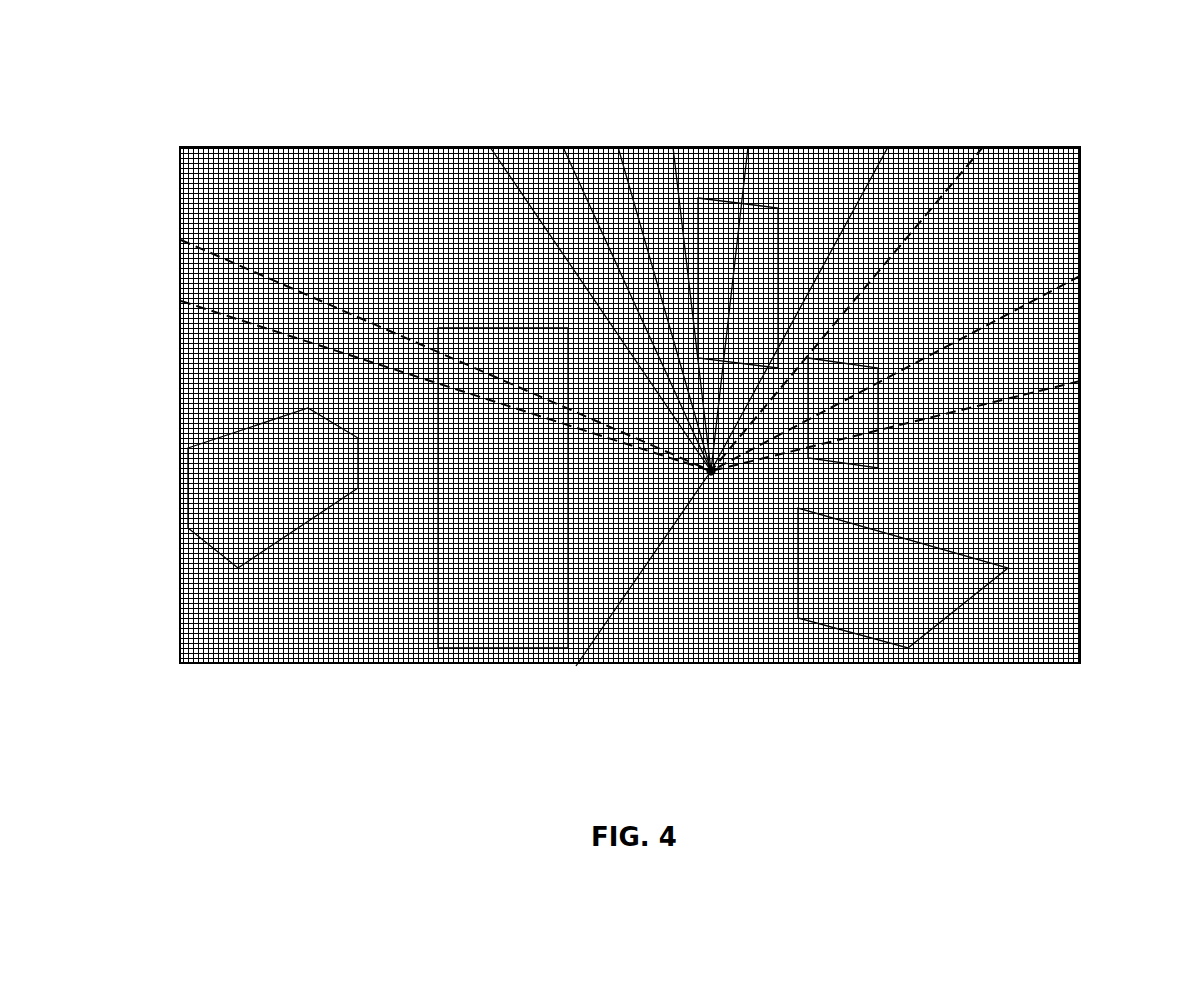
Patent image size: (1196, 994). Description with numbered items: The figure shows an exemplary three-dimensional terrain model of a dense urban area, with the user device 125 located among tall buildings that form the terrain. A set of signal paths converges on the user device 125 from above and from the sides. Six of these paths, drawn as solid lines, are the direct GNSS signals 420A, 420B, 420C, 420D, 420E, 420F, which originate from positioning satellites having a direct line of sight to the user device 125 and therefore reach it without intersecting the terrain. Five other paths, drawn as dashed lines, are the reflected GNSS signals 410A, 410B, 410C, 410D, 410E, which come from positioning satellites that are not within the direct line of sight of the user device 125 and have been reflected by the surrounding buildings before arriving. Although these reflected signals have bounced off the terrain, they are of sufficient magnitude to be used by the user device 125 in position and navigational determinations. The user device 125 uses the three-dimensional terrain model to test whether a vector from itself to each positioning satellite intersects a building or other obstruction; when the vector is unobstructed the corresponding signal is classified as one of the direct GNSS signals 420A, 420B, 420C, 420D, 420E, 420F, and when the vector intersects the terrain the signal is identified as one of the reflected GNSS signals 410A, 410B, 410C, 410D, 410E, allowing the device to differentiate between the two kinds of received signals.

The user device 125 is at (568, 658).
The reflected GNSS signal 410A is at (975, 139).
The reflected GNSS signal 410B is at (1072, 268).
The reflected GNSS signal 410C is at (1072, 373).
The reflected GNSS signal 410D is at (173, 293).
The reflected GNSS signal 410E is at (173, 232).
The direct GNSS signal 420A is at (482, 139).
The direct GNSS signal 420B is at (572, 97).
The direct GNSS signal 420C is at (610, 139).
The direct GNSS signal 420D is at (665, 139).
The direct GNSS signal 420E is at (740, 139).
The direct GNSS signal 420F is at (880, 139).